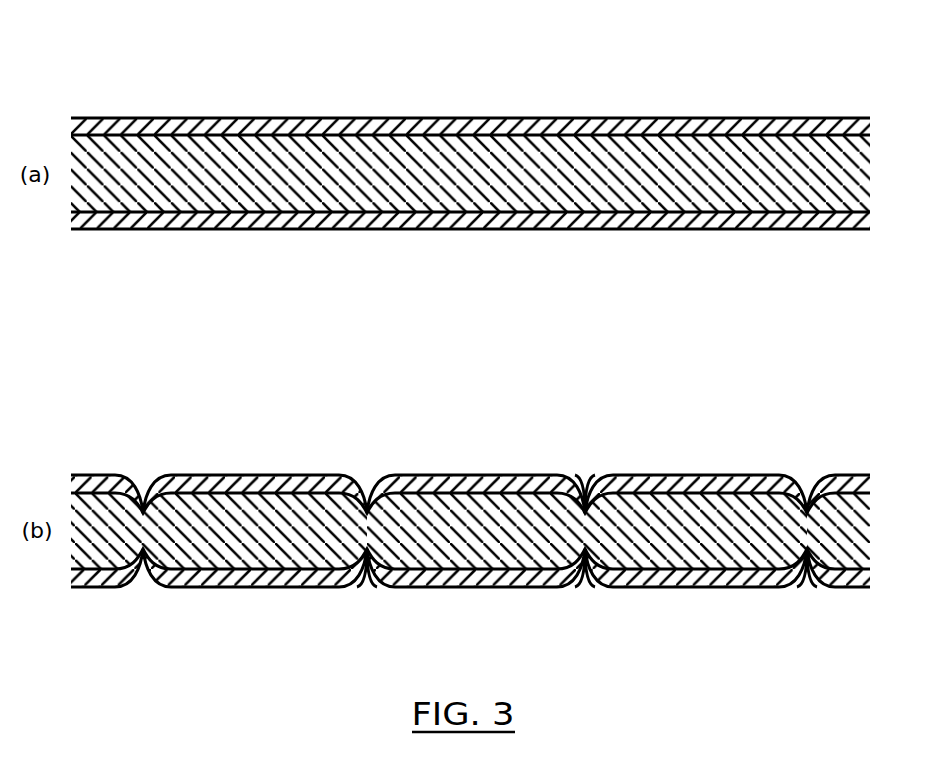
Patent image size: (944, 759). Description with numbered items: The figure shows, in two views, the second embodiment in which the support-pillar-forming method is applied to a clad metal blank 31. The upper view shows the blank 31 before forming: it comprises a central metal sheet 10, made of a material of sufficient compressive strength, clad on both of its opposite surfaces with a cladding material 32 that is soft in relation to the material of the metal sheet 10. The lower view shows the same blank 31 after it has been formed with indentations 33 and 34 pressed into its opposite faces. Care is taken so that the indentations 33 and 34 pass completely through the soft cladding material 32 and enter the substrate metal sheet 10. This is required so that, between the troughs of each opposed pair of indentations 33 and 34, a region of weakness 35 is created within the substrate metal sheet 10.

The metal sheet 10 is at (458, 167).
The metal blank 31 is at (497, 102).
The cladding material 32 is at (635, 118).
The indentation 33 is at (585, 512).
The indentation 34 is at (590, 578).
The region of weakness 35 is at (363, 560).